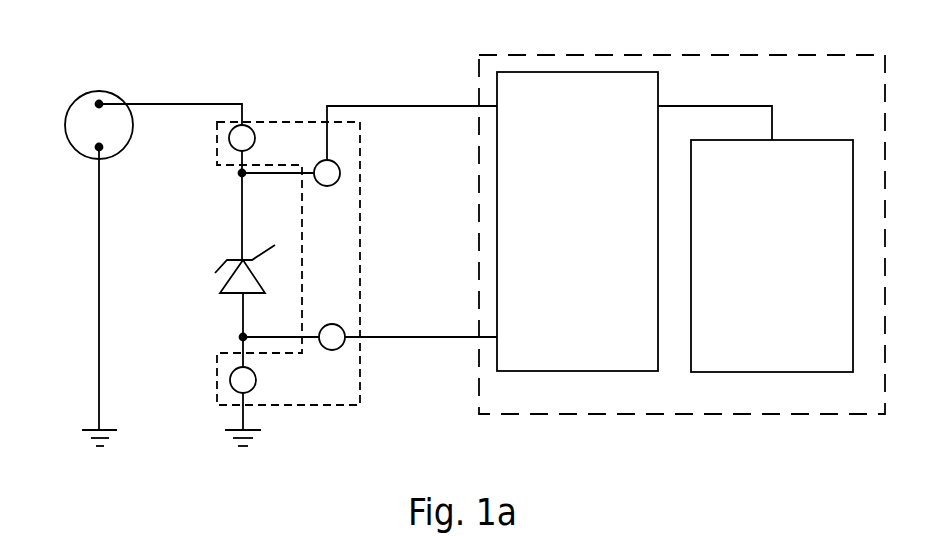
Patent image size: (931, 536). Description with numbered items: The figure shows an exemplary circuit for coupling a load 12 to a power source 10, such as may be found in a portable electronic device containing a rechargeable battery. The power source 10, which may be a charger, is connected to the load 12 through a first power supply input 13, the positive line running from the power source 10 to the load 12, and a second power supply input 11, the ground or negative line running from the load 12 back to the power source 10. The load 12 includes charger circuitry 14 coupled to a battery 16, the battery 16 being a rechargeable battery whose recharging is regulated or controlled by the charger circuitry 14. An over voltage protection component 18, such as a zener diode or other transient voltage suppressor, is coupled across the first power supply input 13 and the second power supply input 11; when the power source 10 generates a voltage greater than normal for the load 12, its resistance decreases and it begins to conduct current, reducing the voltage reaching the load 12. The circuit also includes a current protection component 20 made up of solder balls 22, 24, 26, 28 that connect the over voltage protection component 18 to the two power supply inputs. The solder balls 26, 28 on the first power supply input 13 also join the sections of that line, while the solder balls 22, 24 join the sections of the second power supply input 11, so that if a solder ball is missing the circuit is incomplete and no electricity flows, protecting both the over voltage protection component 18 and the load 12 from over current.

The power source 10 is at (72, 104).
The second power supply input 11 is at (99, 300).
The load 12 is at (681, 54).
The first power supply input 13 is at (393, 105).
The charger circuitry 14 is at (575, 372).
The battery 16 is at (765, 372).
The over voltage protection component 18 is at (220, 292).
The current protection component 20 is at (362, 231).
The solder ball 22 is at (257, 388).
The solder ball 24 is at (338, 325).
The solder ball 26 is at (331, 187).
The solder ball 28 is at (256, 144).